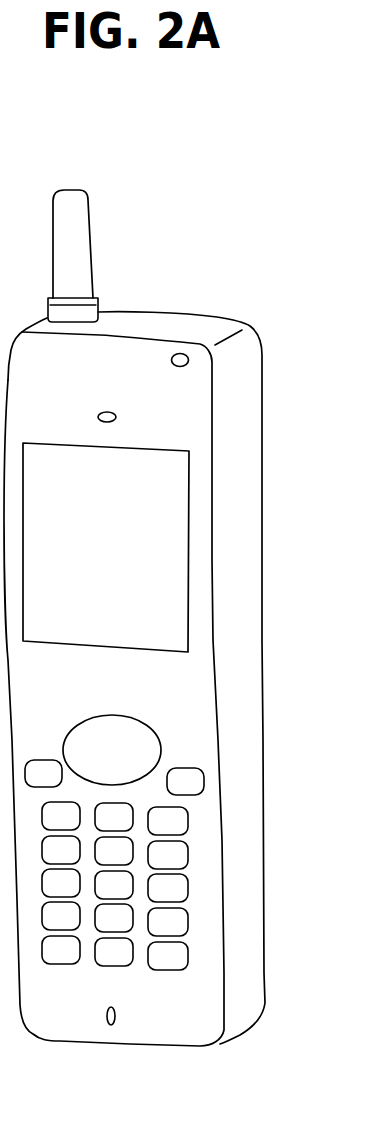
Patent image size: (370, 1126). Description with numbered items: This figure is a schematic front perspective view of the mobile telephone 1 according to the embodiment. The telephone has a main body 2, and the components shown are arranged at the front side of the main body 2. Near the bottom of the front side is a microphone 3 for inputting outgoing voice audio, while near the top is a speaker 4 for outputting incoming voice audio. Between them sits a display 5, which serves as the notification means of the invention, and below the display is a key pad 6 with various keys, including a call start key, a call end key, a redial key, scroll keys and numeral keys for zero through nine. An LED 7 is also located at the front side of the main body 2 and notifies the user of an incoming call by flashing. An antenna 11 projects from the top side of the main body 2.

The mobile telephone 1 is at (168, 165).
The main body 2 is at (245, 470).
The microphone 3 is at (115, 1012).
The speaker 4 is at (115, 414).
The display 5 is at (170, 580).
The key pad 6 is at (188, 836).
The LED 7 is at (188, 360).
The antenna 11 is at (93, 252).